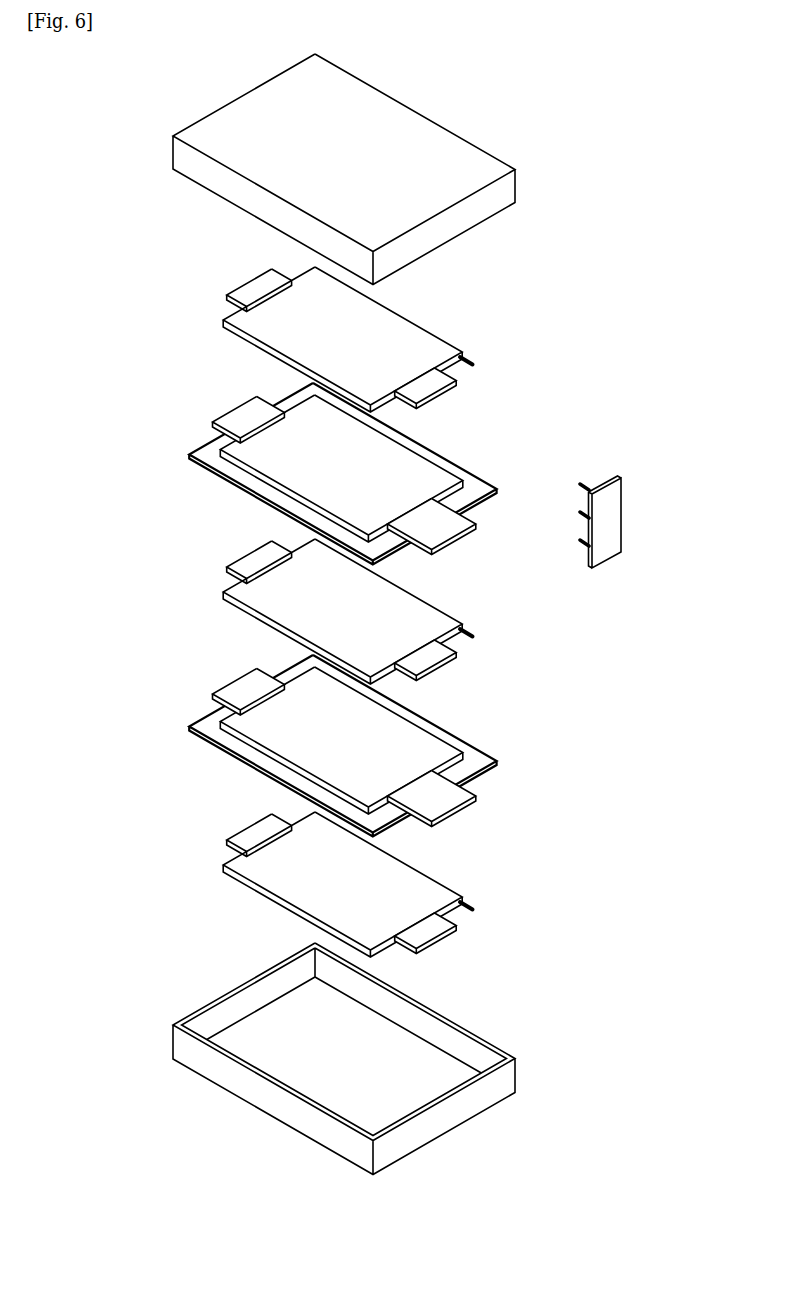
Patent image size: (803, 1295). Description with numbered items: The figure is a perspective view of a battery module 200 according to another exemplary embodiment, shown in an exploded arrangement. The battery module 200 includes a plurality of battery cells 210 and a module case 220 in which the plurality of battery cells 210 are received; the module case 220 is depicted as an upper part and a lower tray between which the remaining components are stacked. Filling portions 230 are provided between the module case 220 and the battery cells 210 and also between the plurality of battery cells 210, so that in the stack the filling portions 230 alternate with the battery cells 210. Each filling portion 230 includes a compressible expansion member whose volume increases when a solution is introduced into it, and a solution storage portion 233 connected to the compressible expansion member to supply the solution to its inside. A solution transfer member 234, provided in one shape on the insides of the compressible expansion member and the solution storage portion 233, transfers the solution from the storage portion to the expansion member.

The battery module 200 is at (78, 88).
The module case 220 is at (172, 150).
The filling portion 230 is at (227, 295).
The solution transfer member 234 is at (466, 355).
The battery cell 210 is at (212, 422).
The solution storage portion 233 is at (621, 478).